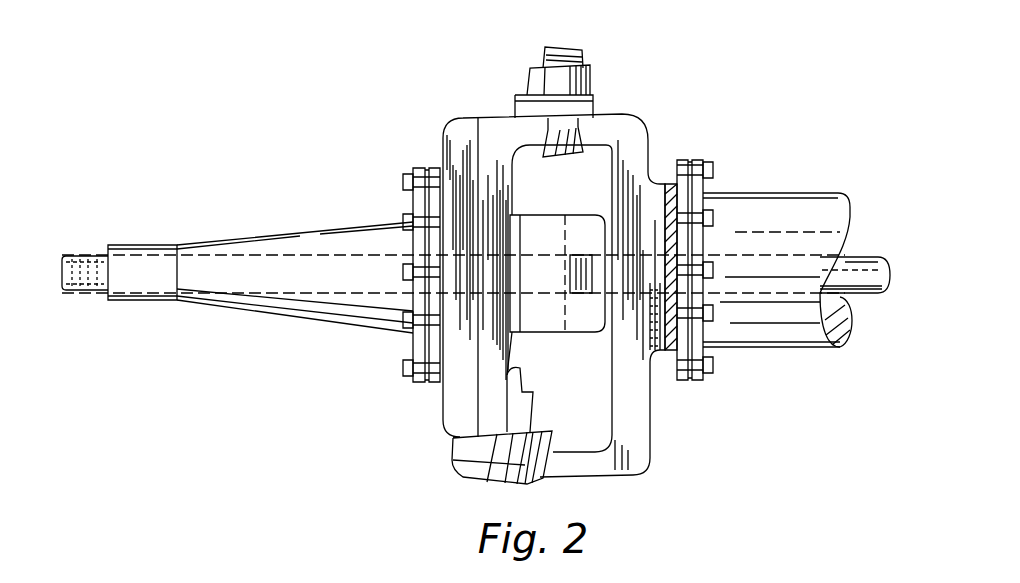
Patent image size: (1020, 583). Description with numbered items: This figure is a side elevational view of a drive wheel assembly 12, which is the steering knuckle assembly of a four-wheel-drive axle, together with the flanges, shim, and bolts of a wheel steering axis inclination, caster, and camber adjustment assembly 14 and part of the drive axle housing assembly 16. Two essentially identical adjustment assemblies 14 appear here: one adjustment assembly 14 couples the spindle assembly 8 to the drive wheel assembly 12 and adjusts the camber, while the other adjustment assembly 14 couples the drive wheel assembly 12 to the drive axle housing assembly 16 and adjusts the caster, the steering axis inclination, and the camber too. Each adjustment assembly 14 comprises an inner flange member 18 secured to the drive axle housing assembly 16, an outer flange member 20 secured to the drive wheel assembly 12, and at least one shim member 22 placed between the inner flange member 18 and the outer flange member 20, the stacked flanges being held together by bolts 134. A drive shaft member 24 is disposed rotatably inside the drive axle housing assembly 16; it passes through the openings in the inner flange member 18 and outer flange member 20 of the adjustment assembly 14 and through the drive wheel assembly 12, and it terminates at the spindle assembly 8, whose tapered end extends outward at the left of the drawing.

The spindle assembly 8 is at (245, 202).
The drive wheel assembly 12 is at (638, 88).
The wheel SAI, caster, and camber adjustment assembly 14 is at (697, 137).
The drive axle housing assembly 16 is at (770, 222).
The inner flange member 18 is at (417, 167).
The outer flange member 20 is at (432, 167).
The shim member 22 is at (422, 167).
The drive shaft member 24 is at (83, 288).
The bolt 134 is at (405, 178).